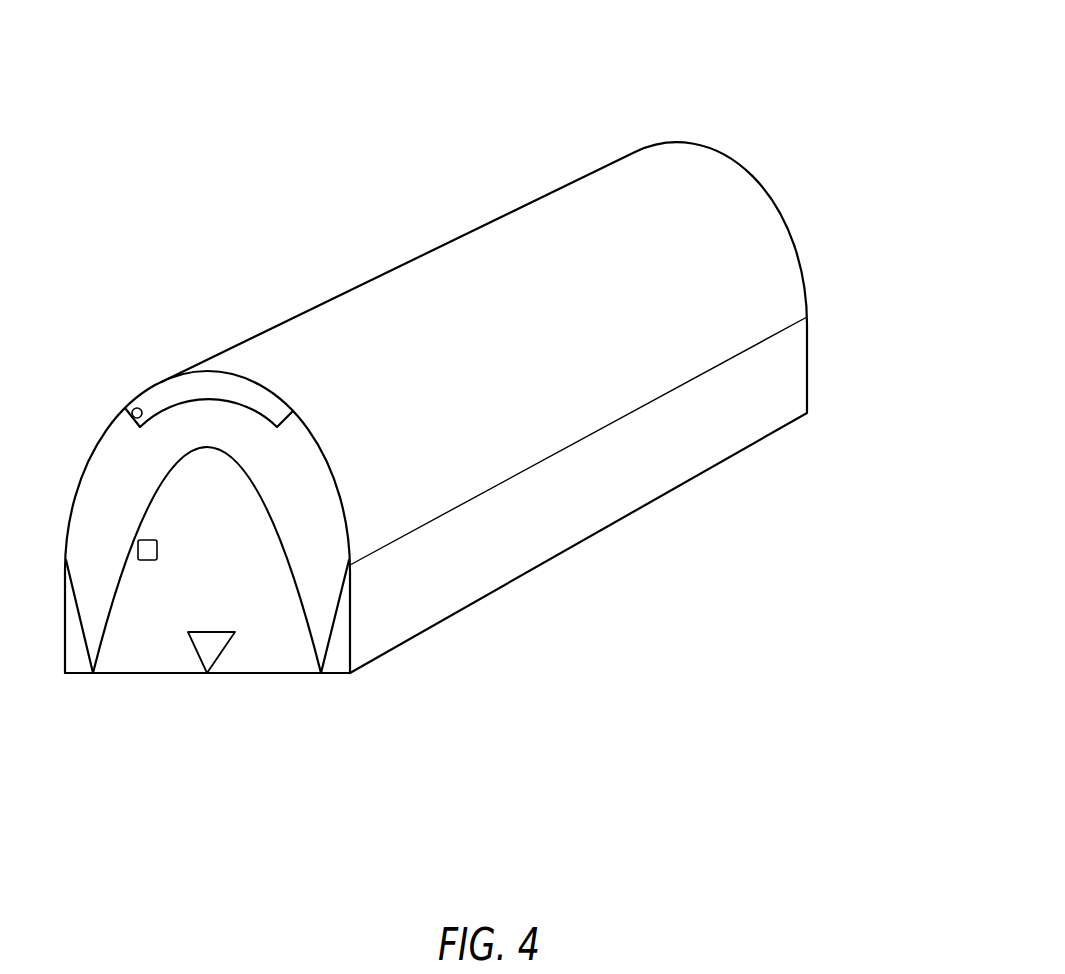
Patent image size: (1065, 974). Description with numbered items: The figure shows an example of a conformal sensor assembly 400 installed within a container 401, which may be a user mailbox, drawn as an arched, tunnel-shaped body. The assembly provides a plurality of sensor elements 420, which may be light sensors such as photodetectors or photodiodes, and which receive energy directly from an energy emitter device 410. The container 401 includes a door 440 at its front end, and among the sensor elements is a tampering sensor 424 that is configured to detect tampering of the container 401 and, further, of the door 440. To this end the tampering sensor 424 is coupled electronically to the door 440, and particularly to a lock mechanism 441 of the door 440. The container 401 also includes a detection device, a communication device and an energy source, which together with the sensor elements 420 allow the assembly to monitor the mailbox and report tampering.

The conformal sensor assembly 400 is at (418, 92).
The container 401 is at (810, 220).
The energy emitter device 410 is at (215, 647).
The plurality of sensor elements 420 is at (187, 385).
The tampering sensor 424 is at (132, 408).
The door 440 is at (278, 533).
The lock mechanism 441 is at (138, 548).